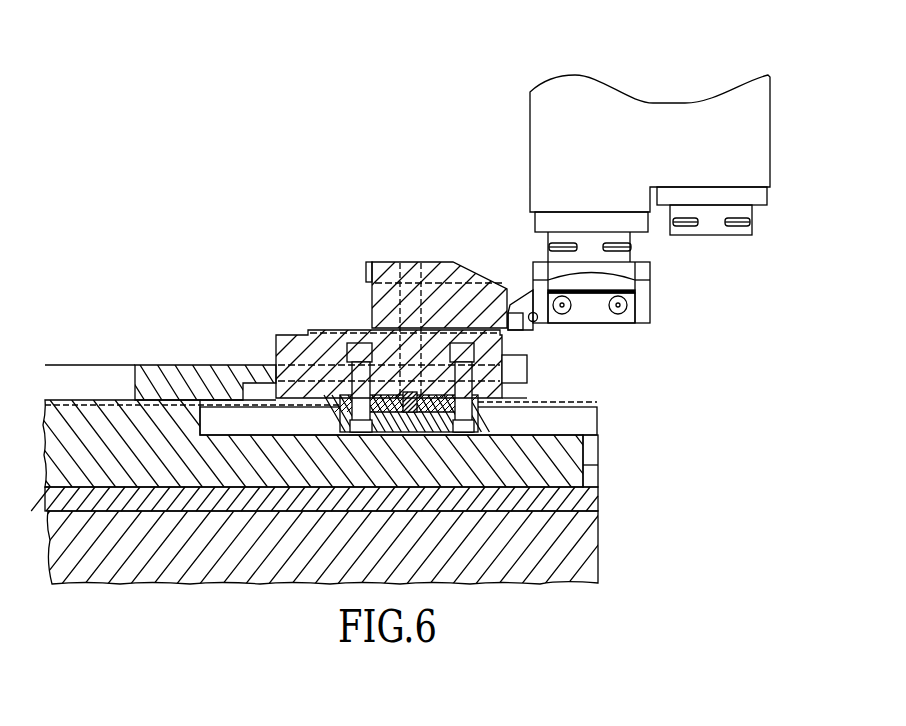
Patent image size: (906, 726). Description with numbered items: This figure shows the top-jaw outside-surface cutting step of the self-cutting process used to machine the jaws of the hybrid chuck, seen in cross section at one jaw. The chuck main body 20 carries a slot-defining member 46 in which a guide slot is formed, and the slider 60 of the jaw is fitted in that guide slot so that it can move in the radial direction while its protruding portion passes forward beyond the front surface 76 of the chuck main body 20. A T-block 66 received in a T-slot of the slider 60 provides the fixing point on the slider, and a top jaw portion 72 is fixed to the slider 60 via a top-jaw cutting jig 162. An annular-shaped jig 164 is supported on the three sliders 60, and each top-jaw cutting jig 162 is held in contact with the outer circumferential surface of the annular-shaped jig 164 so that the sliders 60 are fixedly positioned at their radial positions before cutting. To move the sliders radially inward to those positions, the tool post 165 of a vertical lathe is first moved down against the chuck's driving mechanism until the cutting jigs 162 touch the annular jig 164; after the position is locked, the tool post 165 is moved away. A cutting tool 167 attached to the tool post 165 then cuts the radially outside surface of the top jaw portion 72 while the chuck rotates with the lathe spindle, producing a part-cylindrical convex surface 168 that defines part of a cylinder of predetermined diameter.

The main body 20 is at (590, 547).
The slot-defining member 46 is at (598, 500).
The slider 60 is at (74, 416).
The T-block 66 is at (487, 419).
The top jaw portion 72 is at (440, 270).
The front surface 76 is at (111, 405).
The top-jaw cutting jig 162 is at (293, 334).
The annular-shaped jig 164 is at (160, 372).
The tool post 165 is at (622, 272).
The cutting tool 167 is at (533, 330).
The part-cylindrical convex surface 168 is at (509, 302).